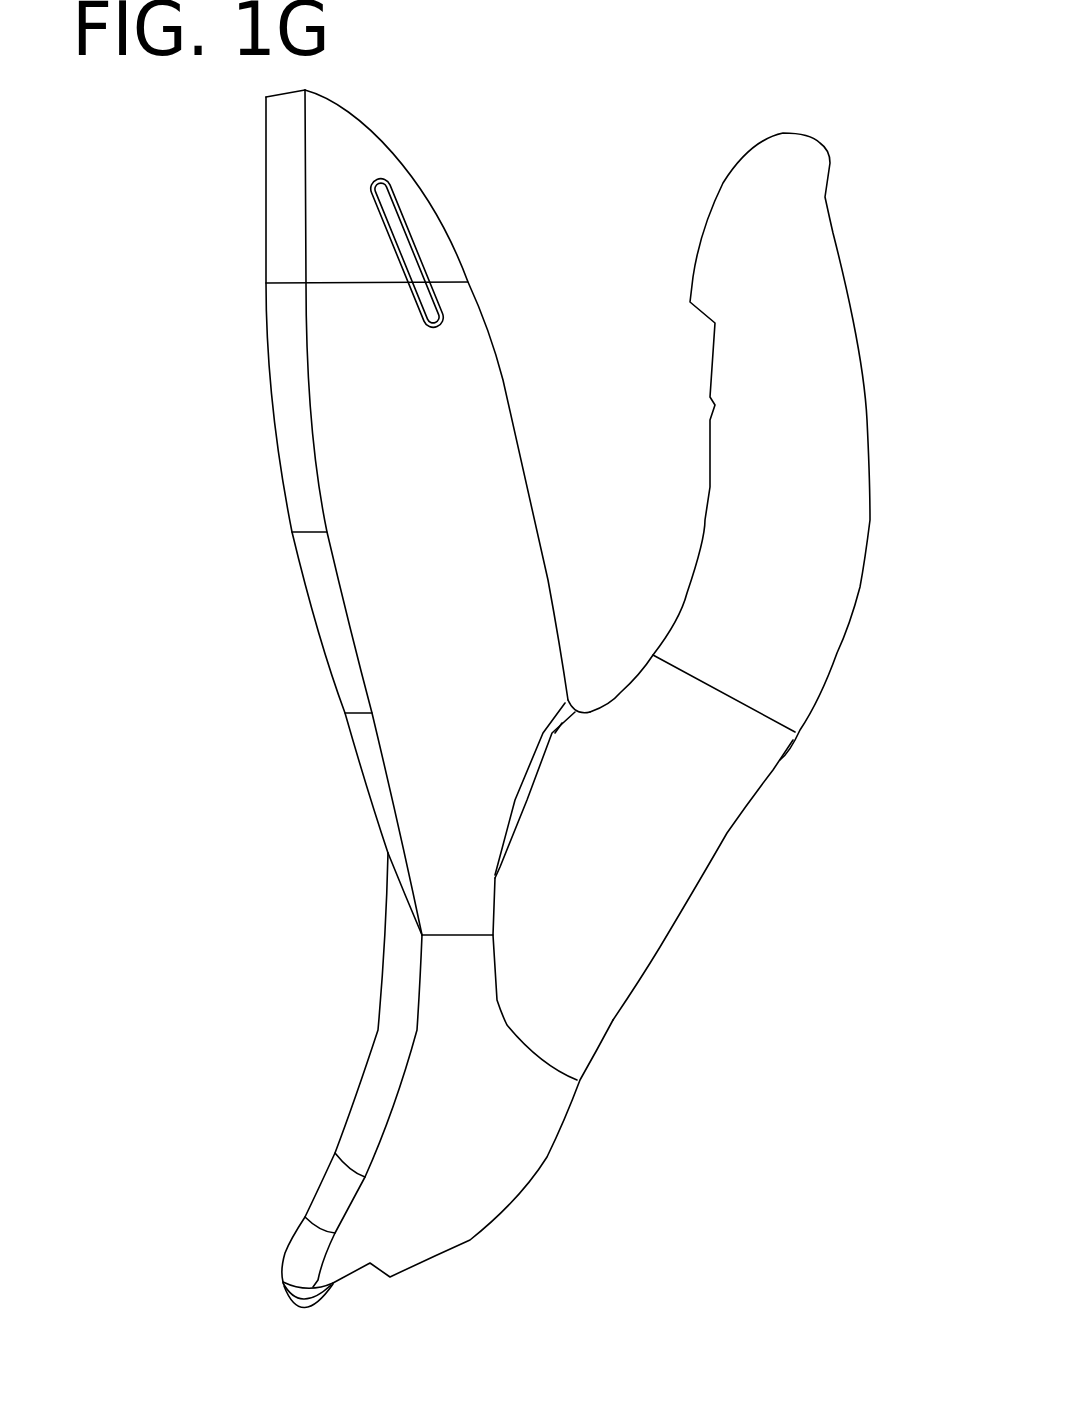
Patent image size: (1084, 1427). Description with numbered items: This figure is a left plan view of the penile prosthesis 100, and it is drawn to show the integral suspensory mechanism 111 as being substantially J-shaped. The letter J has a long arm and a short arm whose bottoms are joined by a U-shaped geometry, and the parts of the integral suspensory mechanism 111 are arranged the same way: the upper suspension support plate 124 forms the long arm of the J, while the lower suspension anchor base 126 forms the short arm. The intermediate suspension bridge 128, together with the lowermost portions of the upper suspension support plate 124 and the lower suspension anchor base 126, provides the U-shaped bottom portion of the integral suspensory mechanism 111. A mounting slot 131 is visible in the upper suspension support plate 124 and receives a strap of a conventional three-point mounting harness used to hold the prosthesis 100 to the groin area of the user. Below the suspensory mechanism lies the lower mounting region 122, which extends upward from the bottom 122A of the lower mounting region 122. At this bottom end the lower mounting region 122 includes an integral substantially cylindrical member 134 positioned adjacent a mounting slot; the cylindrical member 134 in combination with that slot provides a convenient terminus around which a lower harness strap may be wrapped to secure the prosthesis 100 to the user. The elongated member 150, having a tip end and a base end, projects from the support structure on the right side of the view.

The penile prosthesis 100 is at (865, 53).
The integral suspensory mechanism 111 is at (662, 687).
The lower mounting region 122 is at (460, 1193).
The bottom of lower mounting region 122A is at (285, 1280).
The upper suspension support plate 124 is at (415, 455).
The lower suspension anchor base 126 is at (725, 768).
The intermediate suspension bridge 128 is at (587, 713).
The mounting slot 131 is at (430, 232).
The integral cylindrical member 134 is at (323, 1298).
The elongated member 150 is at (758, 278).